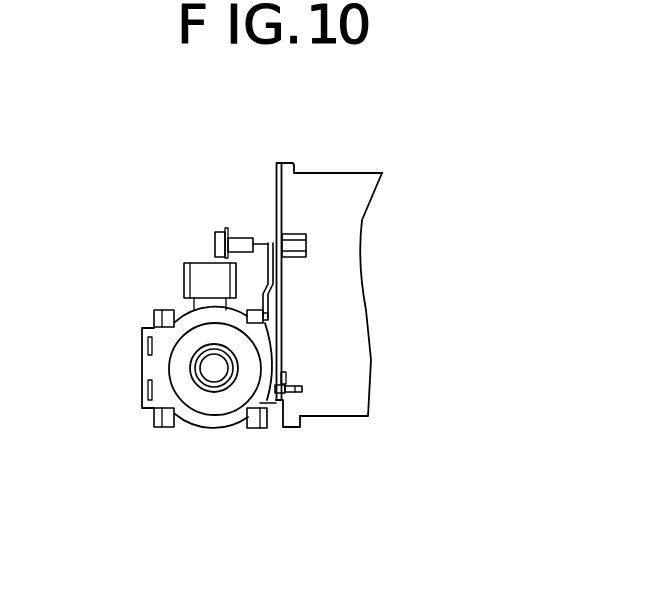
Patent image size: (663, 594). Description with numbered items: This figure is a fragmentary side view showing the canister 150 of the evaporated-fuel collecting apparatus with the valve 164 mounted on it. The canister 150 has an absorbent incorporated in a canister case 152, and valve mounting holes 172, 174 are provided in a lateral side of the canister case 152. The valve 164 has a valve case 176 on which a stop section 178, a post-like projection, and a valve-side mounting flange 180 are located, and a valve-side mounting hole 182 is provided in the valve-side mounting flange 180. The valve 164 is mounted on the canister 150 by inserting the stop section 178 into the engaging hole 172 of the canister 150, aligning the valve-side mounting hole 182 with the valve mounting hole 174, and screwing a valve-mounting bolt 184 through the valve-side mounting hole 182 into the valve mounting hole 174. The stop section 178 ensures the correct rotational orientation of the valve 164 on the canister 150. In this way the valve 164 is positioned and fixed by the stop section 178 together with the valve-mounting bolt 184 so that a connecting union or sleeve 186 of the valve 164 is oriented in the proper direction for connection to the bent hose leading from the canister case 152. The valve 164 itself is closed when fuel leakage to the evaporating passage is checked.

The canister 150 is at (386, 198).
The canister case 152 is at (353, 218).
The valve 164 is at (149, 379).
The valve mounting hole 172 is at (303, 388).
The valve mounting hole 174 is at (306, 251).
The valve case 176 is at (157, 393).
The stop section 178 is at (279, 392).
The valve-side mounting flange 180 is at (268, 240).
The valve-side mounting hole 182 is at (273, 240).
The valve-mounting bolt 184 is at (215, 245).
The connecting union 186 is at (217, 392).